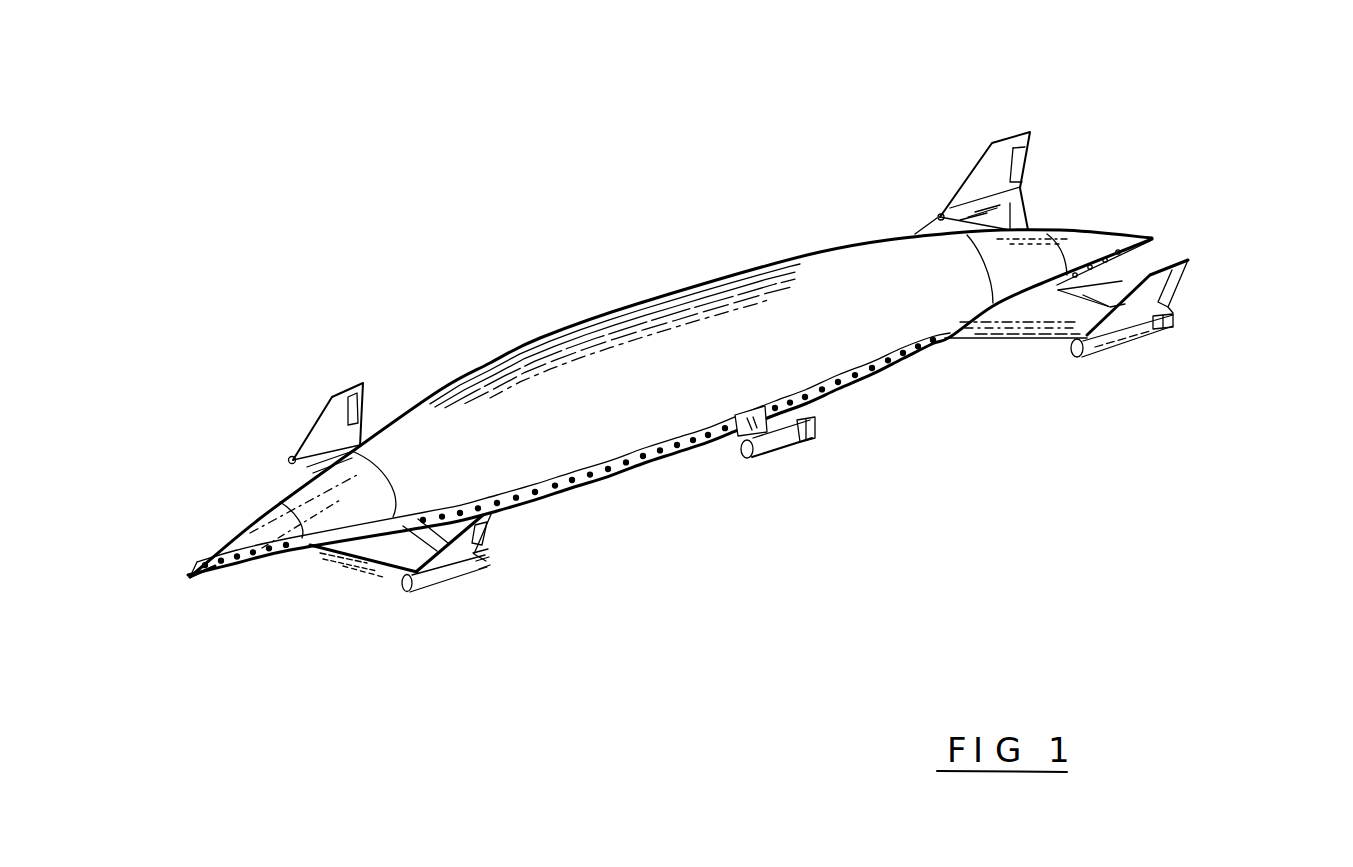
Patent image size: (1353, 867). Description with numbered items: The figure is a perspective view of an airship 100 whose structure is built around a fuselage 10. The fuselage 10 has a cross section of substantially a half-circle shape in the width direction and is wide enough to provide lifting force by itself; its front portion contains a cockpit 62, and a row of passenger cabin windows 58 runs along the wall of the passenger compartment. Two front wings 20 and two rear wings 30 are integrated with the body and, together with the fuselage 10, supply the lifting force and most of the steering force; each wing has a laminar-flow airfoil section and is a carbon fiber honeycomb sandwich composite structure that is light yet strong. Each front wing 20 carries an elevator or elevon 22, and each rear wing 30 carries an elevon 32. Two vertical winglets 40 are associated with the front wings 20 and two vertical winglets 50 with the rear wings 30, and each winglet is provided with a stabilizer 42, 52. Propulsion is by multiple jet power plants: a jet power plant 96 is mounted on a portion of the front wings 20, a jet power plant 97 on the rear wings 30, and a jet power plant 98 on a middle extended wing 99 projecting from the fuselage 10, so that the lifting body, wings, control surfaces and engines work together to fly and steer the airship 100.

The airship 100 is at (833, 44).
The fuselage 10 is at (622, 302).
The front wings 20 is at (290, 457).
The elevator 22 is at (407, 535).
The rear wings 30 is at (940, 215).
The elevon 32 is at (1023, 217).
The vertical winglet 40 is at (327, 413).
The stabilizer 42 is at (363, 403).
The vertical winglet 50 is at (982, 175).
The stabilizer 52 is at (1026, 162).
The passenger cabin windows 58 is at (630, 470).
The cockpit 62 is at (200, 560).
The jet power plant 96 is at (432, 577).
The jet power plant 97 is at (1100, 341).
The jet power plant 98 is at (773, 447).
The middle extended wing 99 is at (743, 433).